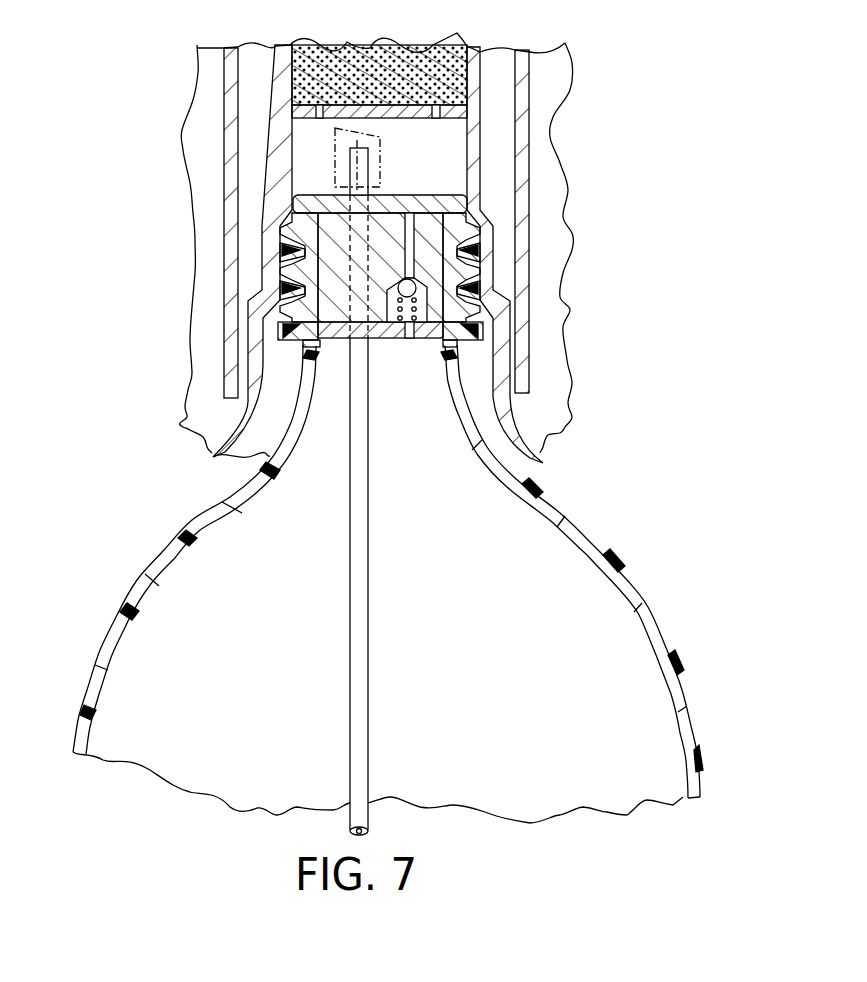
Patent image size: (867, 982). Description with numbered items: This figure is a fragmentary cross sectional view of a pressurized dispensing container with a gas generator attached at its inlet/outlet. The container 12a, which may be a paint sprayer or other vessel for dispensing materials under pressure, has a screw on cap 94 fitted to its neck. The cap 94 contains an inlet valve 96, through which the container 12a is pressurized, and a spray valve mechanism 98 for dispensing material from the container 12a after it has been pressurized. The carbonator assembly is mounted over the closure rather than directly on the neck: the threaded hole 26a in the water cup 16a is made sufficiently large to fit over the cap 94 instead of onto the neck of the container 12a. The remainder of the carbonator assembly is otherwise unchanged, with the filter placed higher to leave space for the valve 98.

The container 12a is at (647, 612).
The water cup 16a is at (495, 290).
The threaded hole 26a is at (482, 249).
The screw on cap 94 is at (445, 195).
The inlet valve 96 is at (410, 338).
The spray valve mechanism 98 is at (382, 174).